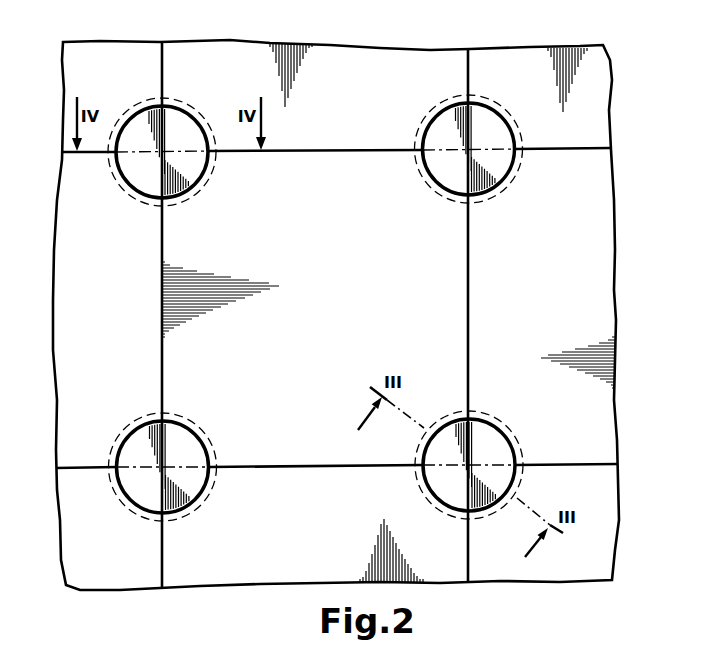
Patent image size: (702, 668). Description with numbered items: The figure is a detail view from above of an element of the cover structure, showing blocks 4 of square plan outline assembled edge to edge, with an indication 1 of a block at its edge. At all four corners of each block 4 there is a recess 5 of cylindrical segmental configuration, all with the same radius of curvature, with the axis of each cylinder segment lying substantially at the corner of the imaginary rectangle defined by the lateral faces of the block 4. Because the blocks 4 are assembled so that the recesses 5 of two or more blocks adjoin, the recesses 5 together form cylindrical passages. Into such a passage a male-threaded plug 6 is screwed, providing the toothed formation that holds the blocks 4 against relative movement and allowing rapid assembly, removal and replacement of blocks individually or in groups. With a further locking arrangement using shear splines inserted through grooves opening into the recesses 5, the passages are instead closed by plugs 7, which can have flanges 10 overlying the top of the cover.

The plate 1 is at (628, 306).
The block 4 is at (110, 301).
The recess 5 is at (198, 178).
The plug 6 is at (150, 438).
The plug 7 is at (141, 124).
The flange 10 is at (191, 106).